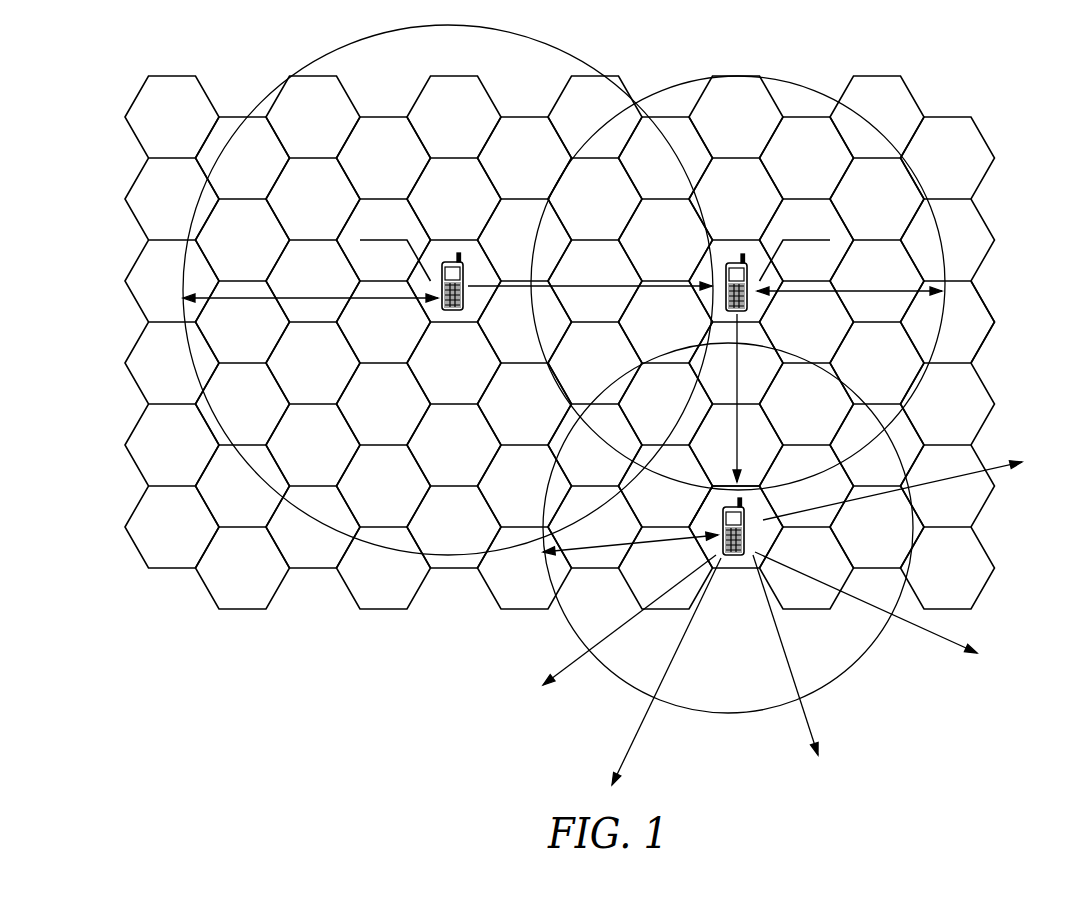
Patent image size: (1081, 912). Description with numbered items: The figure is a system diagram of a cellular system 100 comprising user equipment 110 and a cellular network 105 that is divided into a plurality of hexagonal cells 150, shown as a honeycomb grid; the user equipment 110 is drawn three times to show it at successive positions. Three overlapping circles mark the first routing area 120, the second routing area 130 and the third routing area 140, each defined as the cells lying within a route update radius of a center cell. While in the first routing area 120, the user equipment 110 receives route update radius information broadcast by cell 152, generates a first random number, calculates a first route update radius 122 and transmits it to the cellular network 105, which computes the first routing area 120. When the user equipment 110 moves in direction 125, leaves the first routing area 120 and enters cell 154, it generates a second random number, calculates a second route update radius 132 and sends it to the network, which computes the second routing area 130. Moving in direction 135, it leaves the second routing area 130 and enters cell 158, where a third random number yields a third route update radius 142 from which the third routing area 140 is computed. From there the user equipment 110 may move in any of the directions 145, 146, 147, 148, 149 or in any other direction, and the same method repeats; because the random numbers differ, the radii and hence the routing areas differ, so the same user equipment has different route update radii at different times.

The cellular system 100 is at (1015, 72).
The cellular network 105 is at (108, 118).
The user equipment 110 is at (455, 312).
The routing area RA1 120 is at (522, 36).
The first route update radius 122 is at (310, 297).
The direction 125 is at (617, 285).
The routing area RA2 130 is at (787, 81).
The second route update radius 132 is at (876, 291).
The direction 135 is at (738, 417).
The routing area RA3 140 is at (607, 670).
The third route update radius 142 is at (563, 558).
The direction 145 is at (955, 478).
The direction 146 is at (913, 626).
The direction 147 is at (806, 718).
The direction 148 is at (636, 742).
The direction 149 is at (569, 664).
The cells 150 is at (981, 297).
The center cell 152 is at (419, 262).
The cell 154 is at (771, 262).
The cell 158 is at (701, 505).